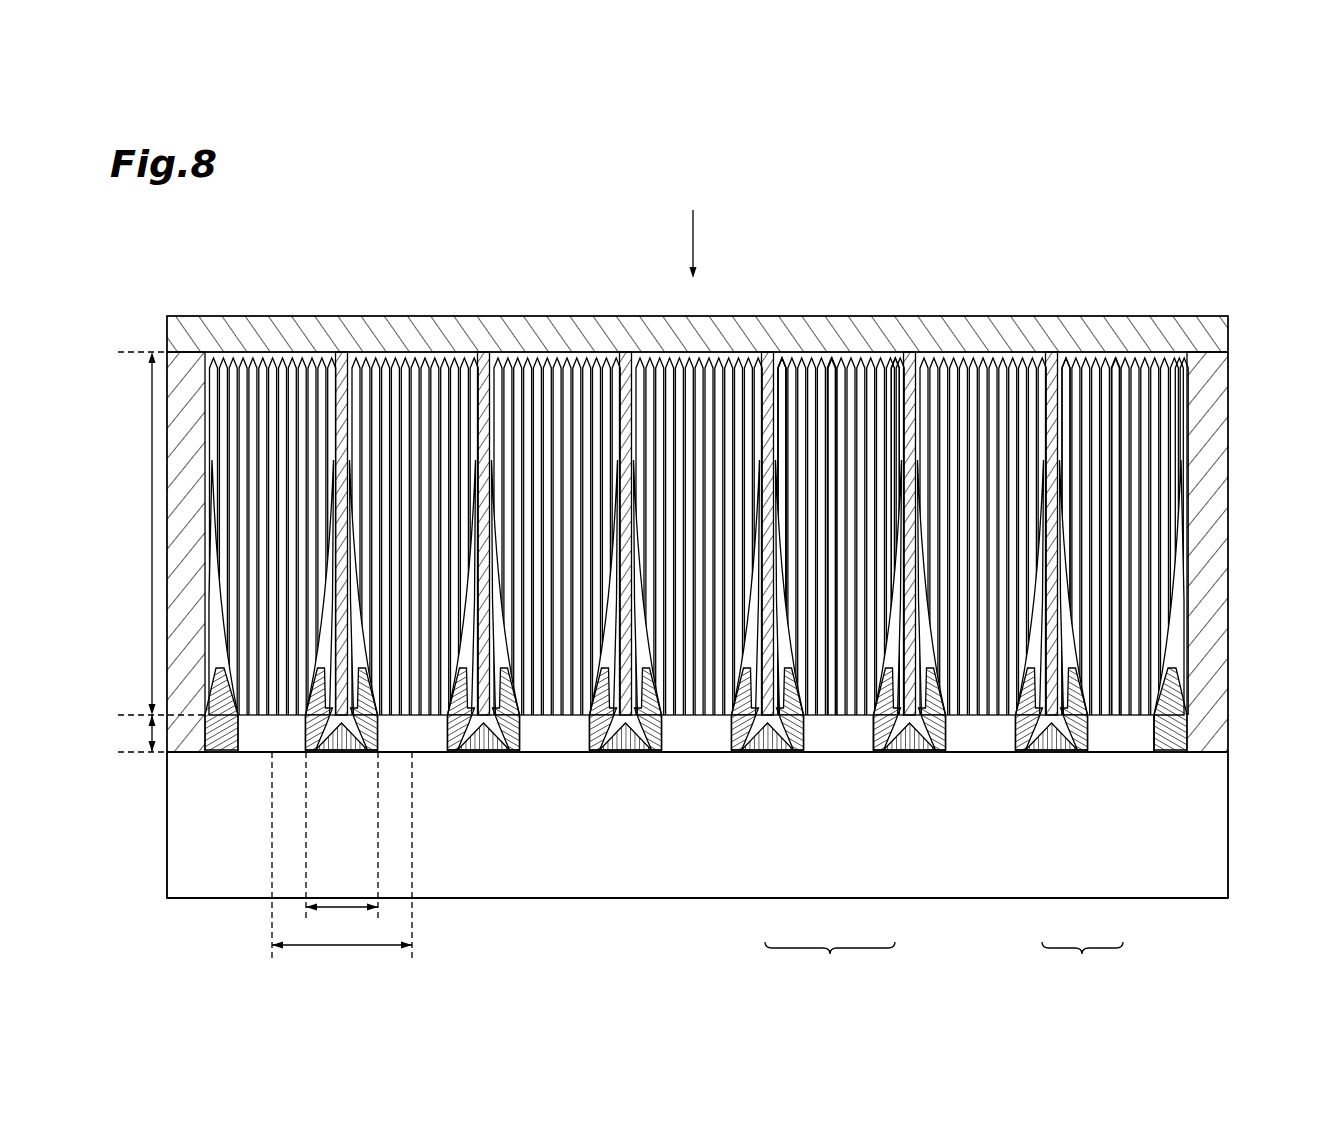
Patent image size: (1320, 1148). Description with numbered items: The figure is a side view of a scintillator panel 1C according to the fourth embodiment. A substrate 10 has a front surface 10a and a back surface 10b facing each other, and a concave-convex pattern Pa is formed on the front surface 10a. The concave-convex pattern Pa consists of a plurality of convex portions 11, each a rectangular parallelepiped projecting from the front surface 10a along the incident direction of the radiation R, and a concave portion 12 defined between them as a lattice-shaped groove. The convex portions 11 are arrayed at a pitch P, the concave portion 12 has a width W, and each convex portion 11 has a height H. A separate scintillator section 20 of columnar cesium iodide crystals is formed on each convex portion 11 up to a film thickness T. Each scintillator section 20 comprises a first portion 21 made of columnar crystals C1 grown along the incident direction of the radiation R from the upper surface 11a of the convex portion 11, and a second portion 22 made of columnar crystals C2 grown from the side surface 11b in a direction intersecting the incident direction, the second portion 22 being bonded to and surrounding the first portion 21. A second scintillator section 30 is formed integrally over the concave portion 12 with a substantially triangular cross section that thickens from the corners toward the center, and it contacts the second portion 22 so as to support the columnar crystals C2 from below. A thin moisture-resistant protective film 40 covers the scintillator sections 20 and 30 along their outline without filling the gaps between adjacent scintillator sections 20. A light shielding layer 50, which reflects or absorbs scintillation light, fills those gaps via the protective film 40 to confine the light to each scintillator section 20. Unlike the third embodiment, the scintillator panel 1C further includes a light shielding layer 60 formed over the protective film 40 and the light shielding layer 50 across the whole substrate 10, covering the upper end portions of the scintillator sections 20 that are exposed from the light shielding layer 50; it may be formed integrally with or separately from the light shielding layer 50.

The scintillator panel 1C is at (1222, 250).
The substrate 10 is at (1230, 805).
The front surface 10a is at (1215, 743).
The back surface 10b is at (1190, 900).
The convex portion 11 is at (833, 700).
The upper surface 11a is at (1128, 700).
The side surface 11b is at (1177, 714).
The concave portion 12 is at (768, 772).
The scintillator section 20 is at (910, 242).
The first portion 21 is at (834, 340).
The second portion 22 is at (783, 340).
The scintillator section 30 is at (1045, 722).
The protective film 40 is at (1192, 440).
The light shielding layer 50 is at (1214, 366).
The light shielding layer 60 is at (1222, 333).
The columnar crystal C1 is at (833, 382).
The columnar crystal C2 is at (782, 376).
The radiation R is at (690, 244).
The height of the scintillator section T is at (150, 514).
The height of the convex portion H is at (148, 736).
The width of the concave portion W is at (348, 909).
The pitch P is at (348, 947).
The concave-convex pattern Pa is at (944, 962).